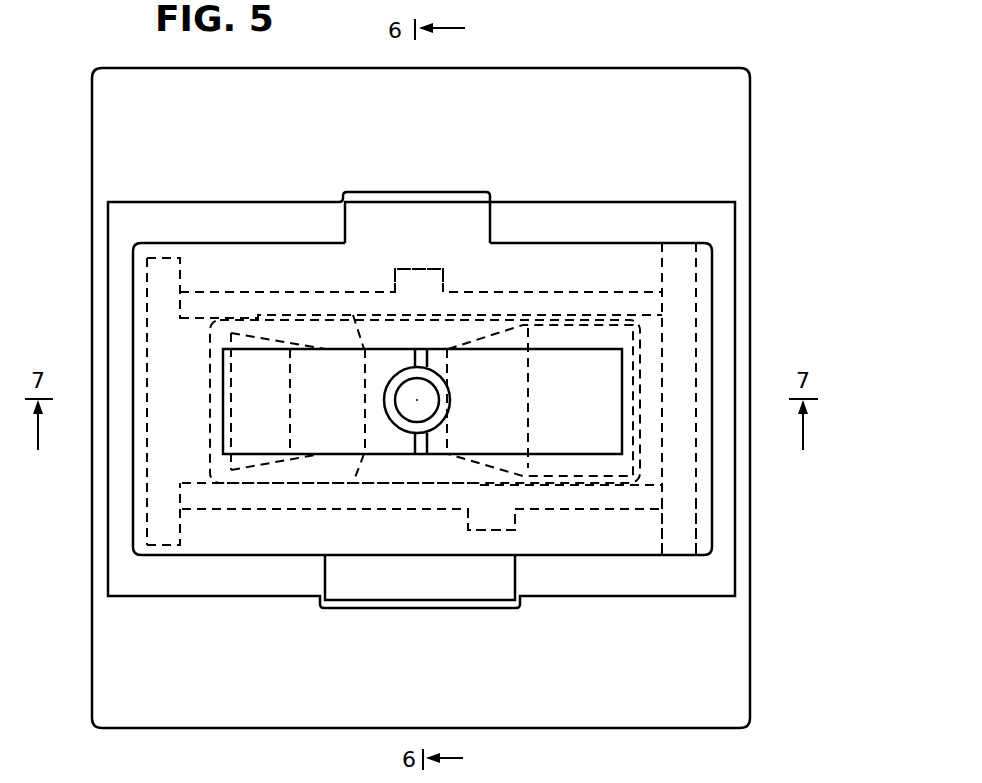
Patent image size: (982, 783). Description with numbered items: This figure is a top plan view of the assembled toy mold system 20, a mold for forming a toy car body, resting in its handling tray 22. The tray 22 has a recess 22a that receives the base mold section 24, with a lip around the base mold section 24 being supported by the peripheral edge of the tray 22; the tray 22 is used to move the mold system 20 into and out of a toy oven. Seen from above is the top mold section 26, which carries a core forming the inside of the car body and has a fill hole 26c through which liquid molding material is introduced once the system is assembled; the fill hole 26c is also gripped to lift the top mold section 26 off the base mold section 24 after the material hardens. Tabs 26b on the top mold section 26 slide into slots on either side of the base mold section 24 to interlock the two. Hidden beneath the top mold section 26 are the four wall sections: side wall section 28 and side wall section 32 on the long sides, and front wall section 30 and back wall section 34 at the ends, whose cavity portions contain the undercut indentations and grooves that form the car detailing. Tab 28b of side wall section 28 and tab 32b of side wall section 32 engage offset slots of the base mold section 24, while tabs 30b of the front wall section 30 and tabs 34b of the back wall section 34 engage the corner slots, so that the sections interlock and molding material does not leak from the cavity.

The toy mold system 20 is at (780, 214).
The tray 22 is at (744, 483).
The recess 22a is at (744, 72).
The base mold section 24 is at (707, 580).
The top mold section 26 is at (627, 461).
The tabs 26b is at (472, 204).
The fill hole 26c is at (432, 402).
The side wall section 28 is at (367, 303).
The tab 28b is at (416, 268).
The front wall section 30 is at (158, 462).
The tabs 30b is at (168, 287).
The side wall section 32 is at (553, 497).
The tab 32b is at (499, 522).
The back wall section 34 is at (682, 365).
The tabs 34b is at (687, 282).